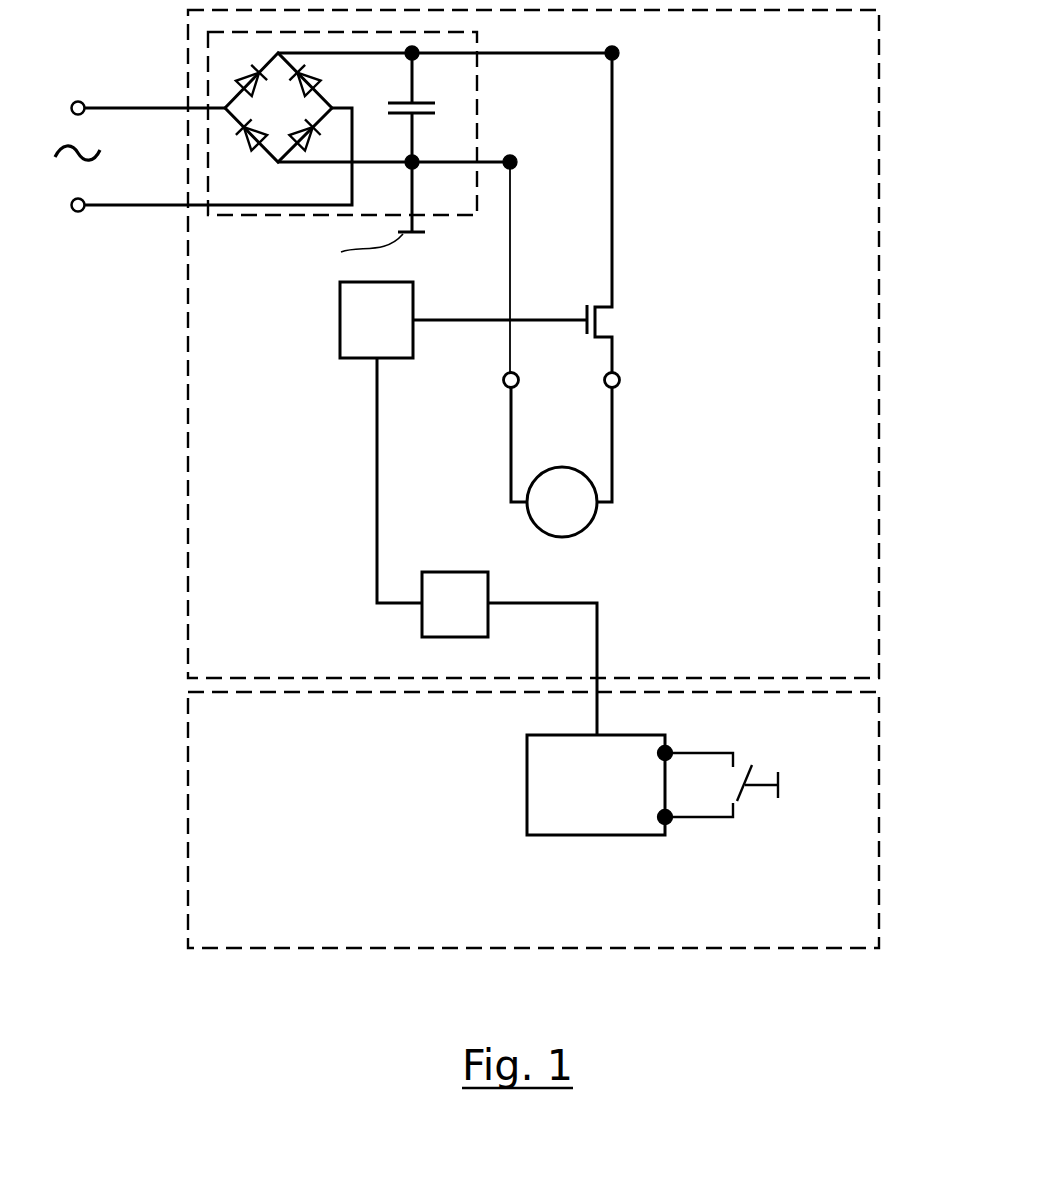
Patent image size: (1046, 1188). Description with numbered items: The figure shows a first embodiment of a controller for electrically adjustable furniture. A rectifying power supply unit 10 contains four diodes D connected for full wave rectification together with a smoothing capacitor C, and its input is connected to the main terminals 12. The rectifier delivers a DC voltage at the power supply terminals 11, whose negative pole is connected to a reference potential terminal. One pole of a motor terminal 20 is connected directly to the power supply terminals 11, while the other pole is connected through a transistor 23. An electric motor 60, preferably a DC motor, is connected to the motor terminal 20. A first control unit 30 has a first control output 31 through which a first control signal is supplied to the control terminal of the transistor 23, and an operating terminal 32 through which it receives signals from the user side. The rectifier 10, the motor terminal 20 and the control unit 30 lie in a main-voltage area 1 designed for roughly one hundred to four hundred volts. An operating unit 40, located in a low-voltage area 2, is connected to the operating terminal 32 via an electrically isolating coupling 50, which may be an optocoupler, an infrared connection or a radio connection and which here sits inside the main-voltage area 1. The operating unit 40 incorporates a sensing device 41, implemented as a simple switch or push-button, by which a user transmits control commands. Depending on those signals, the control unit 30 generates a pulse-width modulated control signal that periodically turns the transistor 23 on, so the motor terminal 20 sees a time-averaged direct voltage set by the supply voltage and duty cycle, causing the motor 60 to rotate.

The main-voltage area 1 is at (880, 83).
The low-voltage area 2 is at (880, 718).
The rectifying power supply unit 10 is at (218, 216).
The power supply terminals 11 is at (610, 58).
The main terminals 12 is at (80, 118).
The motor terminal 20 is at (612, 388).
The transistor 23 is at (610, 305).
The first control unit 30 is at (340, 325).
The first control output 31 is at (414, 323).
The operating terminal 32 is at (377, 360).
The operating unit 40 is at (578, 852).
The sensing device 41 is at (742, 803).
The electrically isolating coupling 50 is at (467, 571).
The electric motor 60 is at (592, 528).
The smoothing capacitor C is at (390, 107).
The diodes D is at (298, 86).